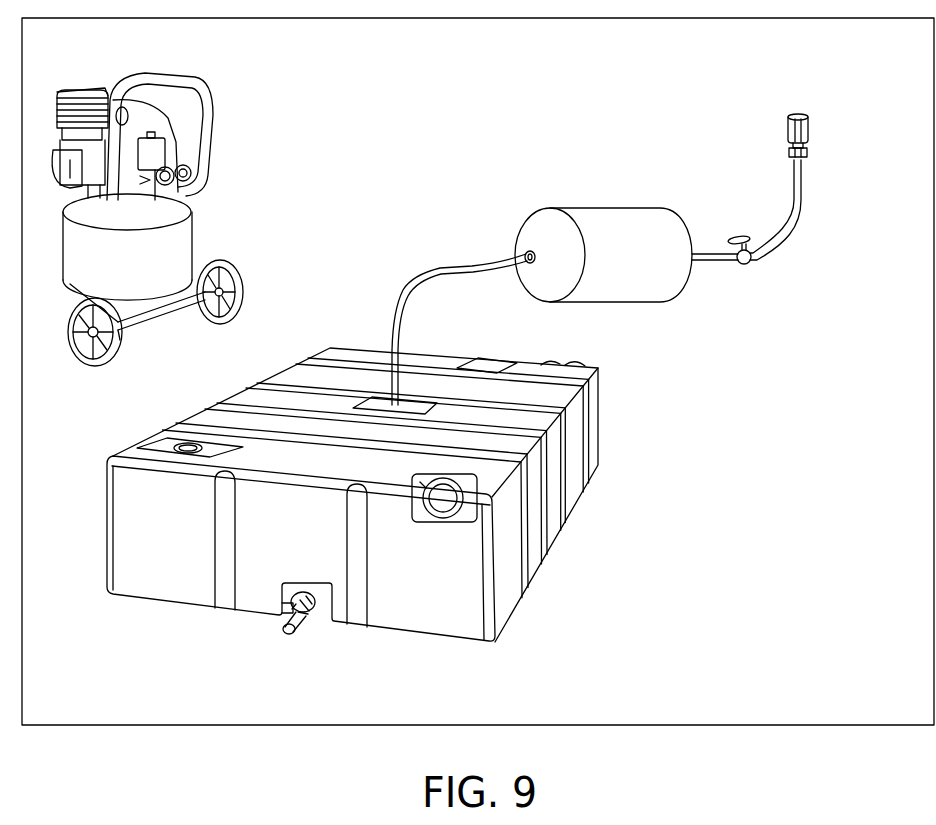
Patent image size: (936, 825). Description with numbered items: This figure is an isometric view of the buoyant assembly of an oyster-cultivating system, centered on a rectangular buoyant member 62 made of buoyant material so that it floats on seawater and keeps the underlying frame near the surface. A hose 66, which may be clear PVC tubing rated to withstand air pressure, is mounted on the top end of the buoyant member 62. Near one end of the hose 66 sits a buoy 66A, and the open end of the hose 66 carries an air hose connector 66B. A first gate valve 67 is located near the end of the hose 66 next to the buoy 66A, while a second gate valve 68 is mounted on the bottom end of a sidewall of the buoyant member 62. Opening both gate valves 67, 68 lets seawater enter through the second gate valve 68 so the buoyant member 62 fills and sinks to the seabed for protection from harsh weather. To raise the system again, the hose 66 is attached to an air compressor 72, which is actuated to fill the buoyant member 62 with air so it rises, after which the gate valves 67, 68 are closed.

The buoyant member 62 is at (533, 535).
The hose 66 is at (452, 267).
The buoy 66A is at (657, 287).
The air hose connector 66B is at (810, 130).
The first gate valve 67 is at (743, 268).
The second gate valve 68 is at (318, 606).
The air compressor 72 is at (178, 208).